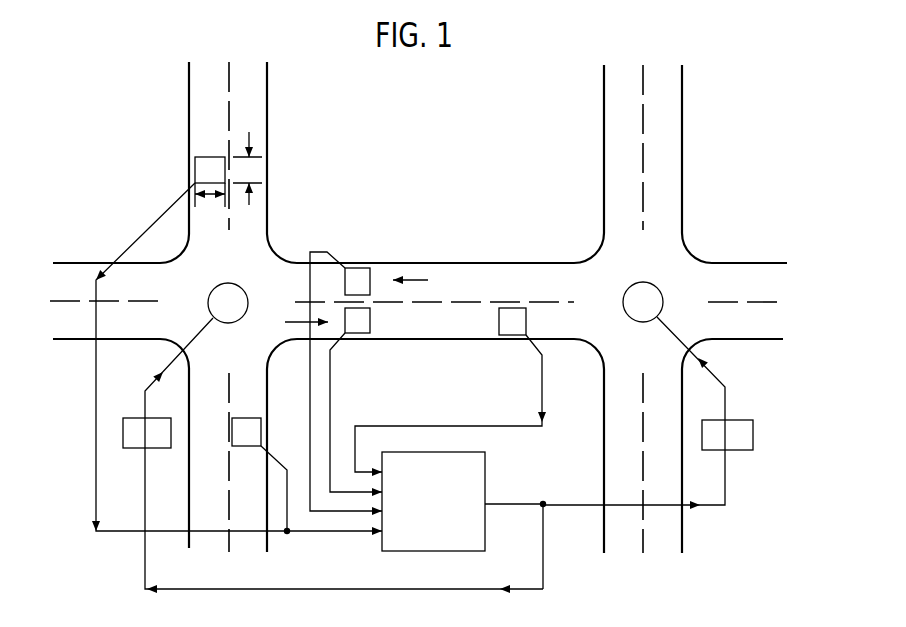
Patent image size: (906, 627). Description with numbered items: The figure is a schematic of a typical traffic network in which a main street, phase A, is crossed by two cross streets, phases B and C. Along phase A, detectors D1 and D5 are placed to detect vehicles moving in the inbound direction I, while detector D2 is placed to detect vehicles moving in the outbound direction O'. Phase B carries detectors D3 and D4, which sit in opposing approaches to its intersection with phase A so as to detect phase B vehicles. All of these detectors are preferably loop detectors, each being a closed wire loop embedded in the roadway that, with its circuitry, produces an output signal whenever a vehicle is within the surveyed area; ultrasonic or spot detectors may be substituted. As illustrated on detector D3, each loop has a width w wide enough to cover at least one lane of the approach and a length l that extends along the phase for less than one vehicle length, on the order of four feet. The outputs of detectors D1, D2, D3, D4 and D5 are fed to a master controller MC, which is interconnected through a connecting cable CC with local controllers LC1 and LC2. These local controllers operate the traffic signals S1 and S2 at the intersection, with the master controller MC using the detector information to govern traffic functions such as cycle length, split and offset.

The detector D1 is at (357, 334).
The detector D2 is at (370, 278).
The detector D3 is at (195, 165).
The detector D4 is at (261, 433).
The detector D5 is at (499, 322).
The traffic signal S1 is at (228, 303).
The traffic signal S2 is at (643, 302).
The local controller LC1 is at (333, 455).
The local controller LC2 is at (648, 413).
The master controller MC is at (433, 501).
The connecting cable CC is at (507, 504).
The inbound direction I is at (296, 322).
The outbound direction O' is at (430, 276).
The width W is at (211, 195).
The length l is at (247, 168).